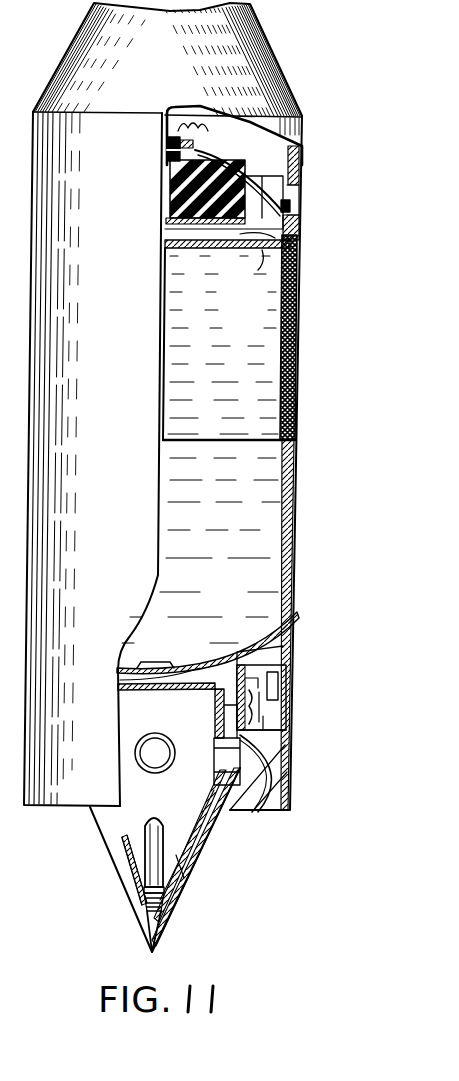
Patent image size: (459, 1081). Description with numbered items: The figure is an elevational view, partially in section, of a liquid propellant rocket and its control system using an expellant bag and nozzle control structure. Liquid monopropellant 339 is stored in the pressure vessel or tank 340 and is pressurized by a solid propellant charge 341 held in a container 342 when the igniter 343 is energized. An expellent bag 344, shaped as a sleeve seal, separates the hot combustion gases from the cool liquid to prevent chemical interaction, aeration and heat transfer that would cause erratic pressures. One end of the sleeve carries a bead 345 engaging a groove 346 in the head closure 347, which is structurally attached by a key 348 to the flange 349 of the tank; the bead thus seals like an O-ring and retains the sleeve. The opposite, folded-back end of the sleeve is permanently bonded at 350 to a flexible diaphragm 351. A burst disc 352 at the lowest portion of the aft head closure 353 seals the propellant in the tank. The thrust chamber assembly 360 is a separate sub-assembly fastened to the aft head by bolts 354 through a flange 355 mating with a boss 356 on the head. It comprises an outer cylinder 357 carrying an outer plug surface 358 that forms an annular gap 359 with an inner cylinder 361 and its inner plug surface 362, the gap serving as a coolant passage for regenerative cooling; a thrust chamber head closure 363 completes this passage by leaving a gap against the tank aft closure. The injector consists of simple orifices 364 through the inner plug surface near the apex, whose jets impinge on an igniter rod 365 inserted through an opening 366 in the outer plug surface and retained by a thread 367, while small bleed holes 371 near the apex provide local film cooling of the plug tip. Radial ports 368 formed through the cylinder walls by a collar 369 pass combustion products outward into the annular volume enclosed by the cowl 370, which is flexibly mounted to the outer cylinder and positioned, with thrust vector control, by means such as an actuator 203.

The actuator 203 is at (281, 701).
The monopropellant 339 is at (248, 531).
The tank 340 is at (296, 478).
The solid propellant charge 341 is at (213, 193).
The container 342 is at (258, 196).
The igniter 343 is at (167, 154).
The expellent bag 344 is at (284, 318).
The bead 345 is at (286, 222).
The groove 346 is at (292, 206).
The head closure 347 is at (198, 161).
The key 348 is at (300, 196).
The flange 349 is at (300, 180).
The bond 350 is at (247, 245).
The flexible diaphragm 351 is at (247, 278).
The burst disc 352 is at (160, 662).
The aft head closure 353 is at (270, 640).
The bolts 354 is at (287, 664).
The flange 355 is at (282, 670).
The boss 356 is at (284, 650).
The outer cylinder 357 is at (260, 733).
The outer plug surface 358 is at (203, 824).
The annular gap 359 is at (220, 714).
The thrust chamber assembly 360 is at (195, 857).
The inner cylinder 361 is at (176, 753).
The inner plug surface 362 is at (196, 843).
The thrust chamber head closure 363 is at (181, 694).
The orifices 364 is at (187, 848).
The igniter rod 365 is at (144, 829).
The opening 366 is at (144, 910).
The thread 367 is at (143, 896).
The radial ports 368 is at (285, 767).
The collar 369 is at (276, 804).
The cowl 370 is at (283, 791).
The bleed holes 371 is at (164, 894).